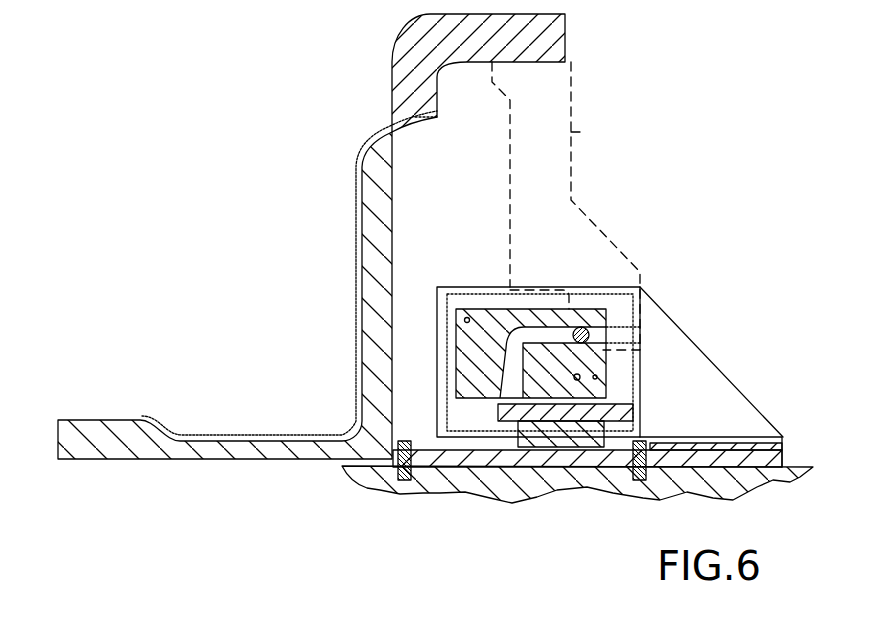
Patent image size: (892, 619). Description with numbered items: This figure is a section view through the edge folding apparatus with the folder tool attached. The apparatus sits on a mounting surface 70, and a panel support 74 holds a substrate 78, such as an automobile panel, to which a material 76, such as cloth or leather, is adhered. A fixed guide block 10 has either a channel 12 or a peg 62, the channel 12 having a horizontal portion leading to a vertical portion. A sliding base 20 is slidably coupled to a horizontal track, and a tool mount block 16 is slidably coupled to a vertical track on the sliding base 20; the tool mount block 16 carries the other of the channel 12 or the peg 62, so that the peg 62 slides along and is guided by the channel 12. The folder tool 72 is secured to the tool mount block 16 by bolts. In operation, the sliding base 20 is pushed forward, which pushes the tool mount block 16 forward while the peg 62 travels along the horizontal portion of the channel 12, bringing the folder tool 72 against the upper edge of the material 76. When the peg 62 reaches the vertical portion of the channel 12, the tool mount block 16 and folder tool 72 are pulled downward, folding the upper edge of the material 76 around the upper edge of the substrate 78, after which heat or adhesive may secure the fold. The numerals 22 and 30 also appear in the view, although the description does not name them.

The fixed guide block 10 is at (498, 312).
The channel 12 is at (510, 378).
The tool mount block 16 is at (583, 132).
The sliding base 20 is at (634, 413).
The base plate 22 is at (527, 452).
The seal strip 30 is at (770, 450).
The peg 62 is at (580, 327).
The mounting surface 70 is at (585, 485).
The folder tool 72 is at (398, 73).
The panel support 74 is at (376, 202).
The material 76 is at (360, 232).
The substrate 78 is at (359, 338).